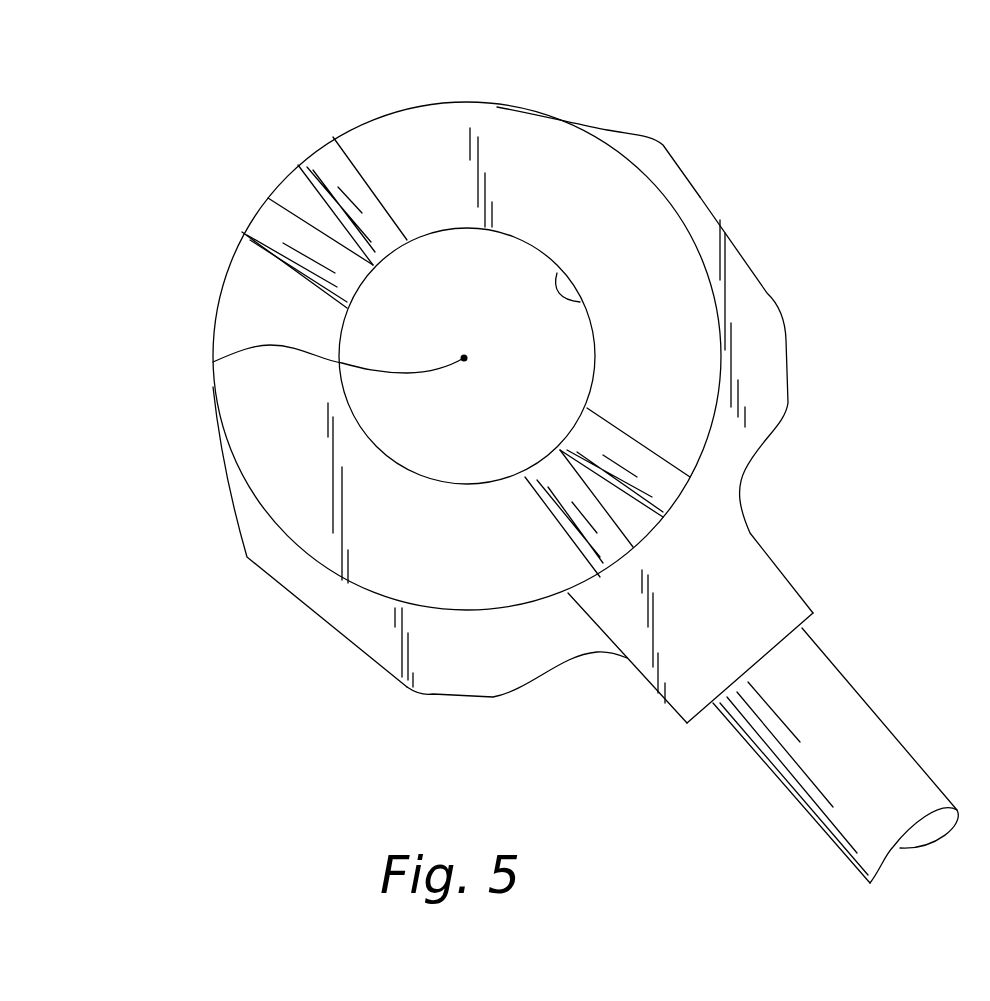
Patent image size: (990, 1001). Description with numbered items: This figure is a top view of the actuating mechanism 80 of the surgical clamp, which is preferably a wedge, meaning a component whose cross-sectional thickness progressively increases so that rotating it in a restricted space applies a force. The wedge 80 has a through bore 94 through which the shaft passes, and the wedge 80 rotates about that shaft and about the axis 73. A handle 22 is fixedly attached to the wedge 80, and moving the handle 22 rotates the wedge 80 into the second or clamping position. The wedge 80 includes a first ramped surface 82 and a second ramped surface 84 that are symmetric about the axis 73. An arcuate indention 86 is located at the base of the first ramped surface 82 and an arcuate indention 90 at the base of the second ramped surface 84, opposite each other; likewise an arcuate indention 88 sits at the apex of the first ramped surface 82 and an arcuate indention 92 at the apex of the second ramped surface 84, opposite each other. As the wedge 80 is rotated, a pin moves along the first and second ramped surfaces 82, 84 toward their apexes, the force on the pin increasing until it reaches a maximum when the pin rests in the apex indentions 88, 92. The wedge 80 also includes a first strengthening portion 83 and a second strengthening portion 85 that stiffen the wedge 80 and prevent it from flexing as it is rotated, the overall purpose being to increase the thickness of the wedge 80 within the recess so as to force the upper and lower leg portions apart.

The handle 22 is at (857, 730).
The axis 73 is at (213, 362).
The actuating mechanism 80 is at (340, 683).
The first ramped surface 82 is at (267, 458).
The first strengthening portion 83 is at (473, 678).
The second ramped surface 84 is at (582, 190).
The second strengthening portion 85 is at (743, 293).
The arcuate indention 86 is at (280, 237).
The arcuate indention 88 is at (593, 515).
The arcuate indention 90 is at (651, 462).
The arcuate indention 92 is at (325, 168).
The through bore 94 is at (458, 227).